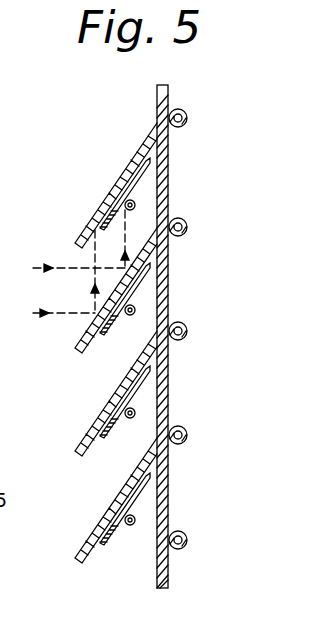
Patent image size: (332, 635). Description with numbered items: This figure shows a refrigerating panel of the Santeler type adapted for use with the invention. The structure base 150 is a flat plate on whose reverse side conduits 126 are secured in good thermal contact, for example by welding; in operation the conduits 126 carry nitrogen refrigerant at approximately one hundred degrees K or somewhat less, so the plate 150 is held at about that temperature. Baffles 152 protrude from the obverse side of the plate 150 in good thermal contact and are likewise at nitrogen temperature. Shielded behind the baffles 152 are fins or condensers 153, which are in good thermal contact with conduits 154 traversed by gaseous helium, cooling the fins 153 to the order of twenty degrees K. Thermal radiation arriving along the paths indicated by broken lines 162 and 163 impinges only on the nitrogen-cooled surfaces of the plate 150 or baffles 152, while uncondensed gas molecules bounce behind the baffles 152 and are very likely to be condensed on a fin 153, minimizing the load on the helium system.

The conduits 126 is at (184, 108).
The structure base 150 is at (168, 370).
The baffles 152 is at (125, 382).
The fins or condensers 153 is at (100, 443).
The conduits 154 is at (130, 418).
The broken line 162 is at (68, 312).
The broken line 163 is at (63, 265).